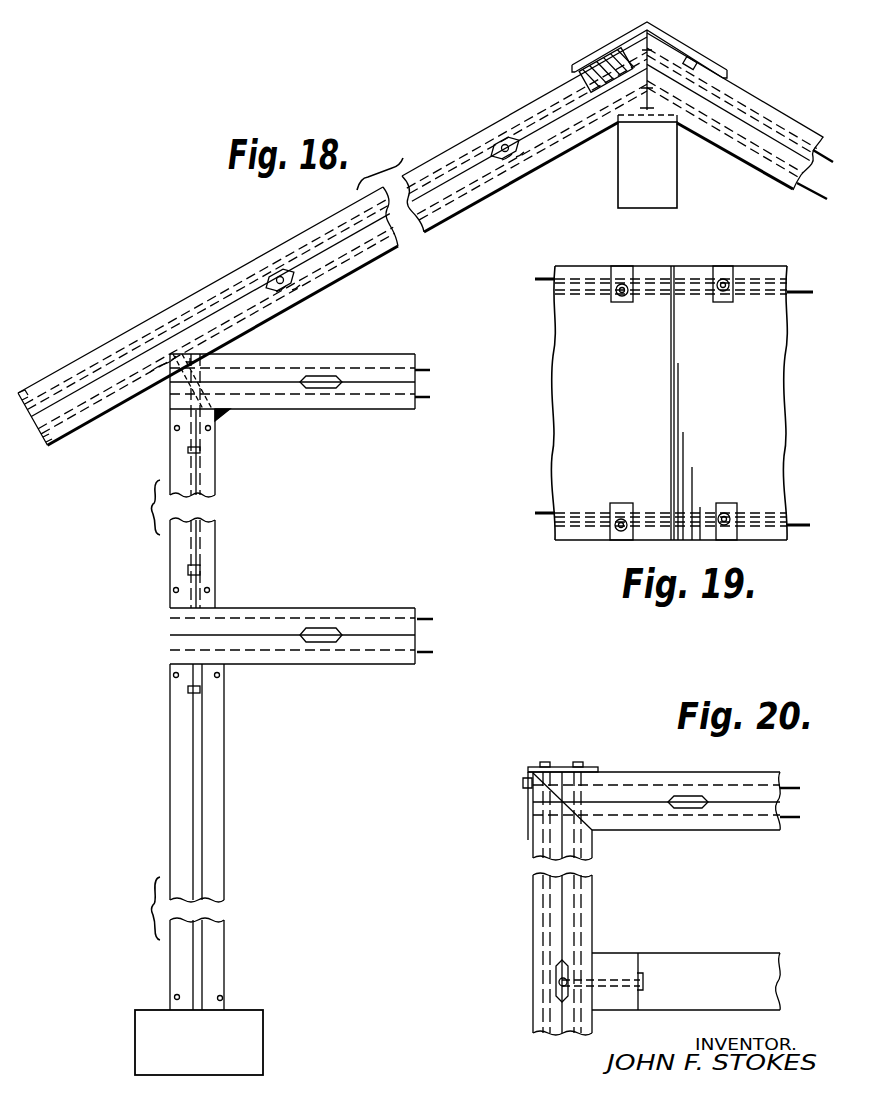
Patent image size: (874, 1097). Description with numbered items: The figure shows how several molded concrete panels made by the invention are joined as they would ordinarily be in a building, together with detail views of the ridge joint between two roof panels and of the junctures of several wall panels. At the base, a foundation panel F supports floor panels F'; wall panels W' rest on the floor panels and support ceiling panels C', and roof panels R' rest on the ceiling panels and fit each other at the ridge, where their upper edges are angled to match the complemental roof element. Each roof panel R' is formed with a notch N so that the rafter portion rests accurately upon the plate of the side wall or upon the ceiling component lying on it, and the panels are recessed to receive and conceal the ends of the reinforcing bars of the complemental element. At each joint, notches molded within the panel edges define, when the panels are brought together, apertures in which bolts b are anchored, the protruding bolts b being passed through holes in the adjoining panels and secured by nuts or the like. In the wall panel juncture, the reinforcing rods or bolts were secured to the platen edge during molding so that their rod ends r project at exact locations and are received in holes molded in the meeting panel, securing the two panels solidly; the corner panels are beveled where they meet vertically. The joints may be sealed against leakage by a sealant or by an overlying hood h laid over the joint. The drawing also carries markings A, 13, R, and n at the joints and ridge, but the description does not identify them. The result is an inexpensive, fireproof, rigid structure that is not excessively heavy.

In FIG. 18, the roof panel R' is at (425, 237).
In FIG. 19, the roof panel R' is at (646, 403).
In FIG. 18, the bolt b is at (272, 274).
In FIG. 18, the clip / angle connector A is at (291, 284).
In FIG. 20, the clip / angle connector A is at (686, 797).
In FIG. 18, the notch N is at (208, 357).
In FIG. 18, the gusset plate 13 is at (168, 360).
In FIG. 18, the ceiling panel C' is at (292, 405).
In FIG. 18, the tie rod R is at (433, 510).
In FIG. 19, the tie rod R is at (665, 389).
In FIG. 20, the tie rod R is at (803, 802).
In FIG. 18, the wall panel W' is at (156, 481).
In FIG. 18, the floor panel F' is at (292, 614).
In FIG. 18, the foundation panel F is at (204, 869).
In FIG. 18, the ridge board n is at (682, 42).
In FIG. 20, the hood h is at (560, 770).
In FIG. 20, the rod end r is at (530, 822).